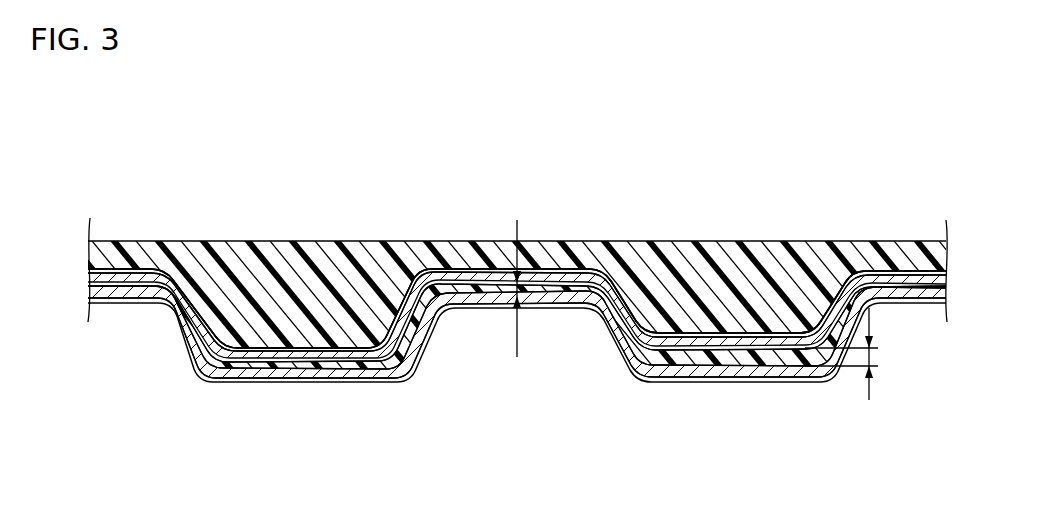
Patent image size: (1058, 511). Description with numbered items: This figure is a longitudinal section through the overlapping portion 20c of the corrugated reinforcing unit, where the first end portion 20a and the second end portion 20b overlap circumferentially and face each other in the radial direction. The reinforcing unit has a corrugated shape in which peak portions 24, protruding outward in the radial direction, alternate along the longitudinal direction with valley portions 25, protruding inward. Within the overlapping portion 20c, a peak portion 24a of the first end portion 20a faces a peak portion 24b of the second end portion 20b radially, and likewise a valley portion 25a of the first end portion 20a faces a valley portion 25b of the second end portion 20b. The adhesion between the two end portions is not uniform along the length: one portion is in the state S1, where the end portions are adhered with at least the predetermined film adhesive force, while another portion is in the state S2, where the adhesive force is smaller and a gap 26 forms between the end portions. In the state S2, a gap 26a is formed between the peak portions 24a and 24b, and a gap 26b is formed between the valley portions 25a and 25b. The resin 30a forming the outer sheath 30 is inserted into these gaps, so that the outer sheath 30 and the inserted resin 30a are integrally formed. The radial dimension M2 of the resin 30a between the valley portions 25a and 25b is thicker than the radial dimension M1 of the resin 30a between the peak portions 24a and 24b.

The first end portion 20a is at (142, 249).
The second end portion 20b is at (132, 300).
The overlapping portion 20c is at (291, 226).
The outer sheath 30 is at (230, 250).
The resin 30a is at (670, 358).
The gap 26 is at (517, 252).
The gap 26a is at (455, 283).
The gap 26b is at (686, 337).
The peak portions 24 is at (517, 309).
The peak portion 24a is at (489, 277).
The peak portion 24b is at (557, 305).
The valley portions 25 is at (517, 326).
The valley portion 25a is at (752, 343).
The valley portion 25b is at (765, 374).
The dimension M1 is at (530, 283).
The dimension M2 is at (875, 356).
The state S1 is at (250, 398).
The state S2 is at (493, 336).